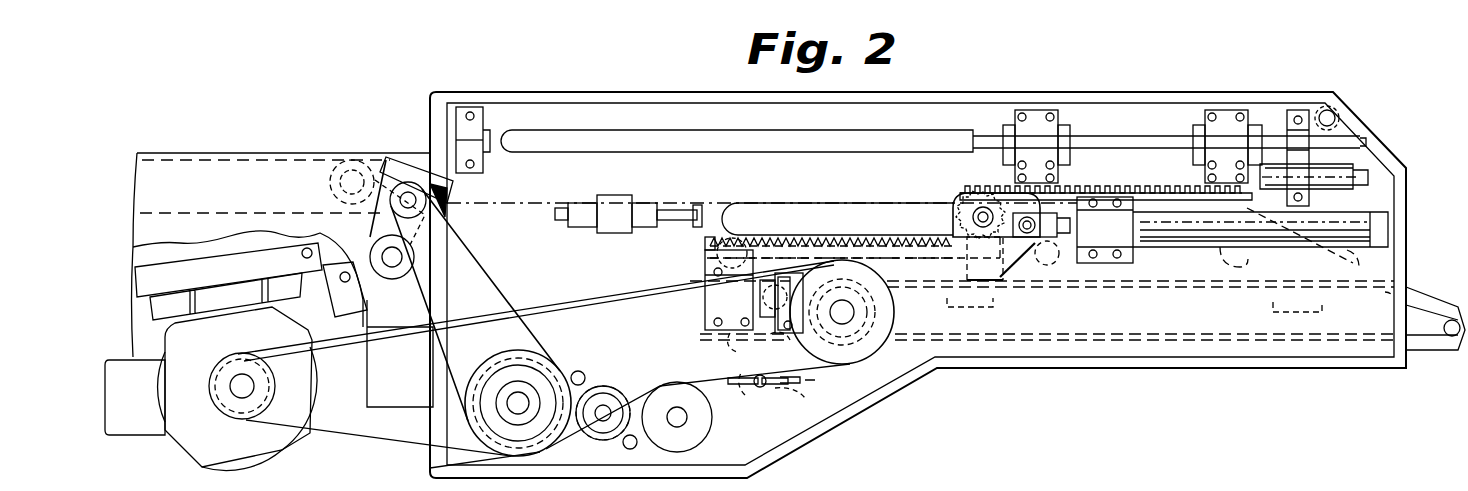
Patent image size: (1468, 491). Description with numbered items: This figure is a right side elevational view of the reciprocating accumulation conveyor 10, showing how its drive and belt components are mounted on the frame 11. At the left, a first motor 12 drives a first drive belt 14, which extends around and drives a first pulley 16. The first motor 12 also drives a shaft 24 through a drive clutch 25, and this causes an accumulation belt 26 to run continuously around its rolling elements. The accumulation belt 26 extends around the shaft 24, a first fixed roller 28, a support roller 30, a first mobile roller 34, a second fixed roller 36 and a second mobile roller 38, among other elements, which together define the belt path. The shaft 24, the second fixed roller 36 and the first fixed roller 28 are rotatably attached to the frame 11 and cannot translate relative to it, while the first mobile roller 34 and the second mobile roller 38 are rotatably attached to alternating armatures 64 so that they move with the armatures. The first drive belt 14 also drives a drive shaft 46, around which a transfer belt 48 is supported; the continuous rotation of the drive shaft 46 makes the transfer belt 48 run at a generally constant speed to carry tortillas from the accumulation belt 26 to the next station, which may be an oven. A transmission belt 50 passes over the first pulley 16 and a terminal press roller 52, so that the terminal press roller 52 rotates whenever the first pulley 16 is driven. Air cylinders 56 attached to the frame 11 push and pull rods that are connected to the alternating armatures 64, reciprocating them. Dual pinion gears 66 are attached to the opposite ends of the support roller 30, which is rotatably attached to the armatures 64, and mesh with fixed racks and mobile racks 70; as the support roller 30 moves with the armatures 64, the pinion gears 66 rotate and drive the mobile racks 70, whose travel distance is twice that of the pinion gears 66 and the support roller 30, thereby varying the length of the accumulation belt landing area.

The reciprocating accumulation conveyor 10 is at (1105, 68).
The frame 11 is at (1183, 350).
The first motor 12 is at (177, 440).
The first drive belt 14 is at (330, 432).
The first pulley 16 is at (425, 466).
The shaft 24 is at (582, 388).
The drive clutch 25 is at (522, 398).
The accumulation belt 26 is at (740, 398).
The first fixed roller 28 is at (466, 212).
The support roller 30 is at (933, 212).
The first mobile roller 34 is at (708, 249).
The second fixed roller 36 is at (783, 247).
The second mobile roller 38 is at (728, 343).
The drive shaft 46 is at (850, 320).
The transfer belt 48 is at (1033, 347).
The transmission belt 50 is at (466, 250).
The terminal press roller 52 is at (406, 196).
The air cylinders 56 is at (1363, 224).
The alternating armatures 64 is at (1032, 247).
The pinion gears 66 is at (965, 208).
The mobile racks 70 is at (1145, 180).